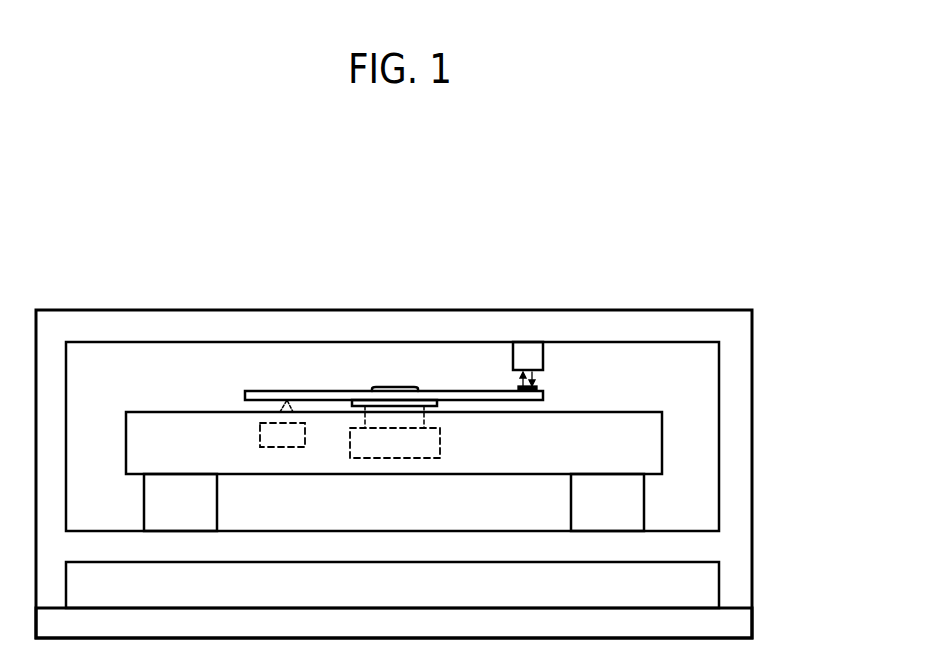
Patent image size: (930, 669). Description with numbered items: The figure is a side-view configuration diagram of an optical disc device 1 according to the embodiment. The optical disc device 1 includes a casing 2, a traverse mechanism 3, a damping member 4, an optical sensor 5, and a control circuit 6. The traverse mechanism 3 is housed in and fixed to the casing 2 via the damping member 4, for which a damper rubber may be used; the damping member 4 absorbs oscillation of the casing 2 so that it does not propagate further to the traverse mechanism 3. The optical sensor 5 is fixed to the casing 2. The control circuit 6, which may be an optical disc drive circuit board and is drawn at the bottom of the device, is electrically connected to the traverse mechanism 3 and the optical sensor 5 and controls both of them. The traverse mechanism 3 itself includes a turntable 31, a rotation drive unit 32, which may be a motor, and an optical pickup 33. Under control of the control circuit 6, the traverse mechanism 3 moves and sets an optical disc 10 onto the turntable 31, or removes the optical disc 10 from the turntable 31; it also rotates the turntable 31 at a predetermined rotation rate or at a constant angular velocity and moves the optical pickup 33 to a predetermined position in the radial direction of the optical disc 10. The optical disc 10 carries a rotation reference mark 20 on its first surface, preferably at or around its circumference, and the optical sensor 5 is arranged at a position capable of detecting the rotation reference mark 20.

The optical disc device 1 is at (623, 285).
The casing 2 is at (752, 358).
The traverse mechanism 3 is at (163, 412).
The damping member 4 is at (143, 500).
The optical sensor 5 is at (513, 358).
The control circuit 6 is at (752, 624).
The optical disc 10 is at (272, 391).
The rotation reference mark 20 is at (538, 386).
The turntable 31 is at (437, 403).
The rotation drive unit 32 is at (441, 448).
The optical pickup 33 is at (259, 433).